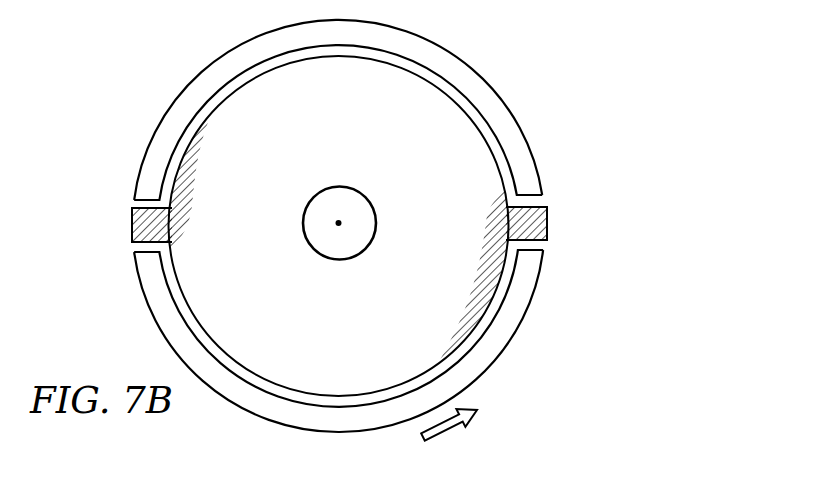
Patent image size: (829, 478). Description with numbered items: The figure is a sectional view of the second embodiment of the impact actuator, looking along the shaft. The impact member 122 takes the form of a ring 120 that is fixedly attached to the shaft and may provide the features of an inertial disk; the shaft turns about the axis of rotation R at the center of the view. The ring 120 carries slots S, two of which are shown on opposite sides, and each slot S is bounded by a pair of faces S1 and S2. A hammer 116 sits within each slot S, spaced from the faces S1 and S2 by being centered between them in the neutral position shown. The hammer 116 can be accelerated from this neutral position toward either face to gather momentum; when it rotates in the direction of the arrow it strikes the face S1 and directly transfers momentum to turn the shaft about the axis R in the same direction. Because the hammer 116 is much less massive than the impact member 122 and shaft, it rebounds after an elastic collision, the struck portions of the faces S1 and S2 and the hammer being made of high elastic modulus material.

The ring 120 is at (312, 222).
The impact member 122 is at (189, 75).
The hammer 116 is at (132, 228).
The slot S is at (110, 204).
The face S1 is at (313, 327).
The face S2 is at (134, 198).
The axis of rotation R is at (340, 218).